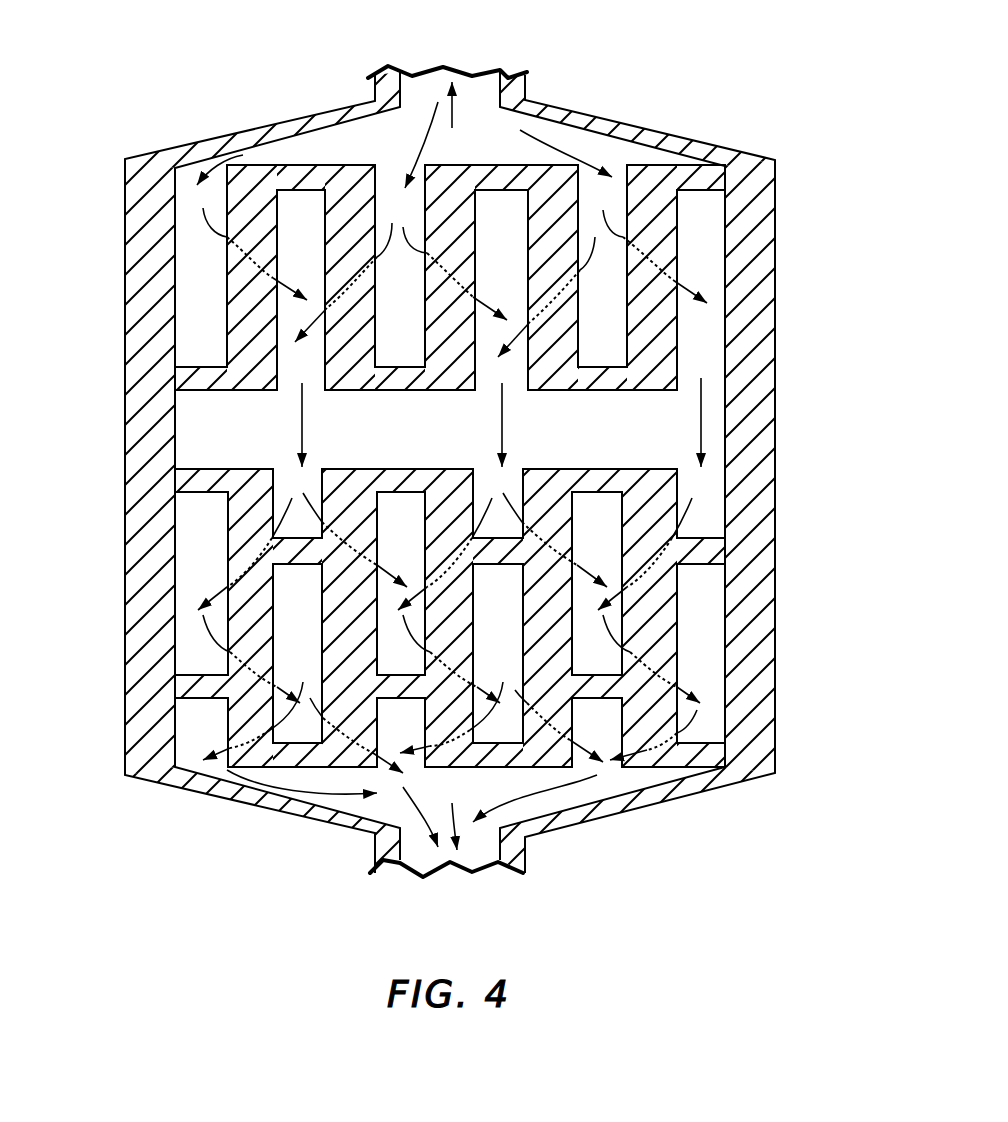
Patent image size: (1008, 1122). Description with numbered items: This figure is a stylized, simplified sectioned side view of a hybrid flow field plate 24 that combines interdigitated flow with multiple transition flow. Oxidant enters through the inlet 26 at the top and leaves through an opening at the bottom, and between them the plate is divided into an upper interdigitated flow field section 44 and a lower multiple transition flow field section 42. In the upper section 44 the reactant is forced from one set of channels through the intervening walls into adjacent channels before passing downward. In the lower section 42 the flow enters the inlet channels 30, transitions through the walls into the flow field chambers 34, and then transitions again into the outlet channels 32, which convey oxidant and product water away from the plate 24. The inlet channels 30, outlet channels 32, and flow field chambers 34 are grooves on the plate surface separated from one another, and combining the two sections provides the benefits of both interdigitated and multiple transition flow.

The flow field plate 24 is at (647, 92).
The inlet 26 is at (404, 471).
The inlet channel 30 is at (714, 533).
The outlet channel 32 is at (603, 731).
The flow field chamber 34 is at (707, 608).
The multiple transition flow field section 42 is at (792, 460).
The interdigitated flow field section 44 is at (792, 160).